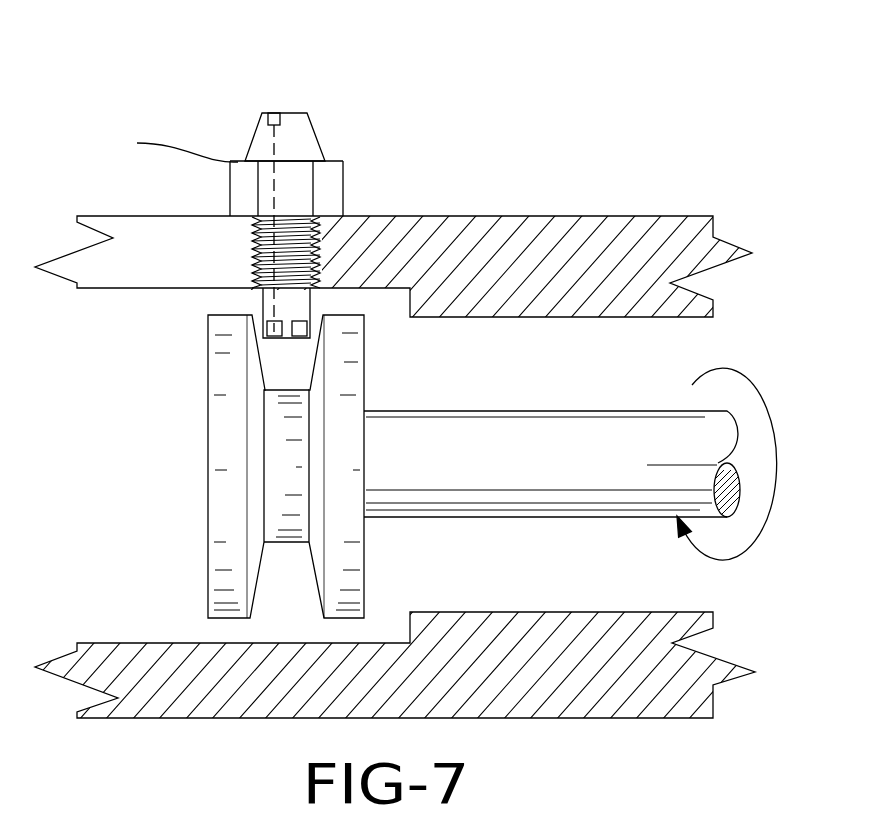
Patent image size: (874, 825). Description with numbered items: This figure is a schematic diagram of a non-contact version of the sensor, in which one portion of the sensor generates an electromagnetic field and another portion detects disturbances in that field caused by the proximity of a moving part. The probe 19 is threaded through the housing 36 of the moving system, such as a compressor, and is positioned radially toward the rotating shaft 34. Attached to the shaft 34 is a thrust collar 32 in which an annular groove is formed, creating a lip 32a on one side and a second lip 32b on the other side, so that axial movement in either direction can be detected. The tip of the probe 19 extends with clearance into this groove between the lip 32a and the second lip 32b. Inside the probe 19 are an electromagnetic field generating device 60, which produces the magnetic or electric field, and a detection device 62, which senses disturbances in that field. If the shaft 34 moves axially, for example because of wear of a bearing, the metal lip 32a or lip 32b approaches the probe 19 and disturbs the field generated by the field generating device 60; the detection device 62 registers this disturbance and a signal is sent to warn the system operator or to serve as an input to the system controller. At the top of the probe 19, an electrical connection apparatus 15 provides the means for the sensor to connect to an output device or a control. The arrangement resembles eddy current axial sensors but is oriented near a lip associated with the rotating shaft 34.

The electrical connection apparatus 15 is at (273, 113).
The probe 19 is at (305, 113).
The housing 36 is at (548, 216).
The detection device 62 is at (273, 327).
The electromagnetic field generating device 60 is at (300, 324).
The thrust collar 32 is at (283, 466).
The lip 32a is at (318, 352).
The second lip 32b is at (255, 352).
The rotating shaft 34 is at (620, 411).